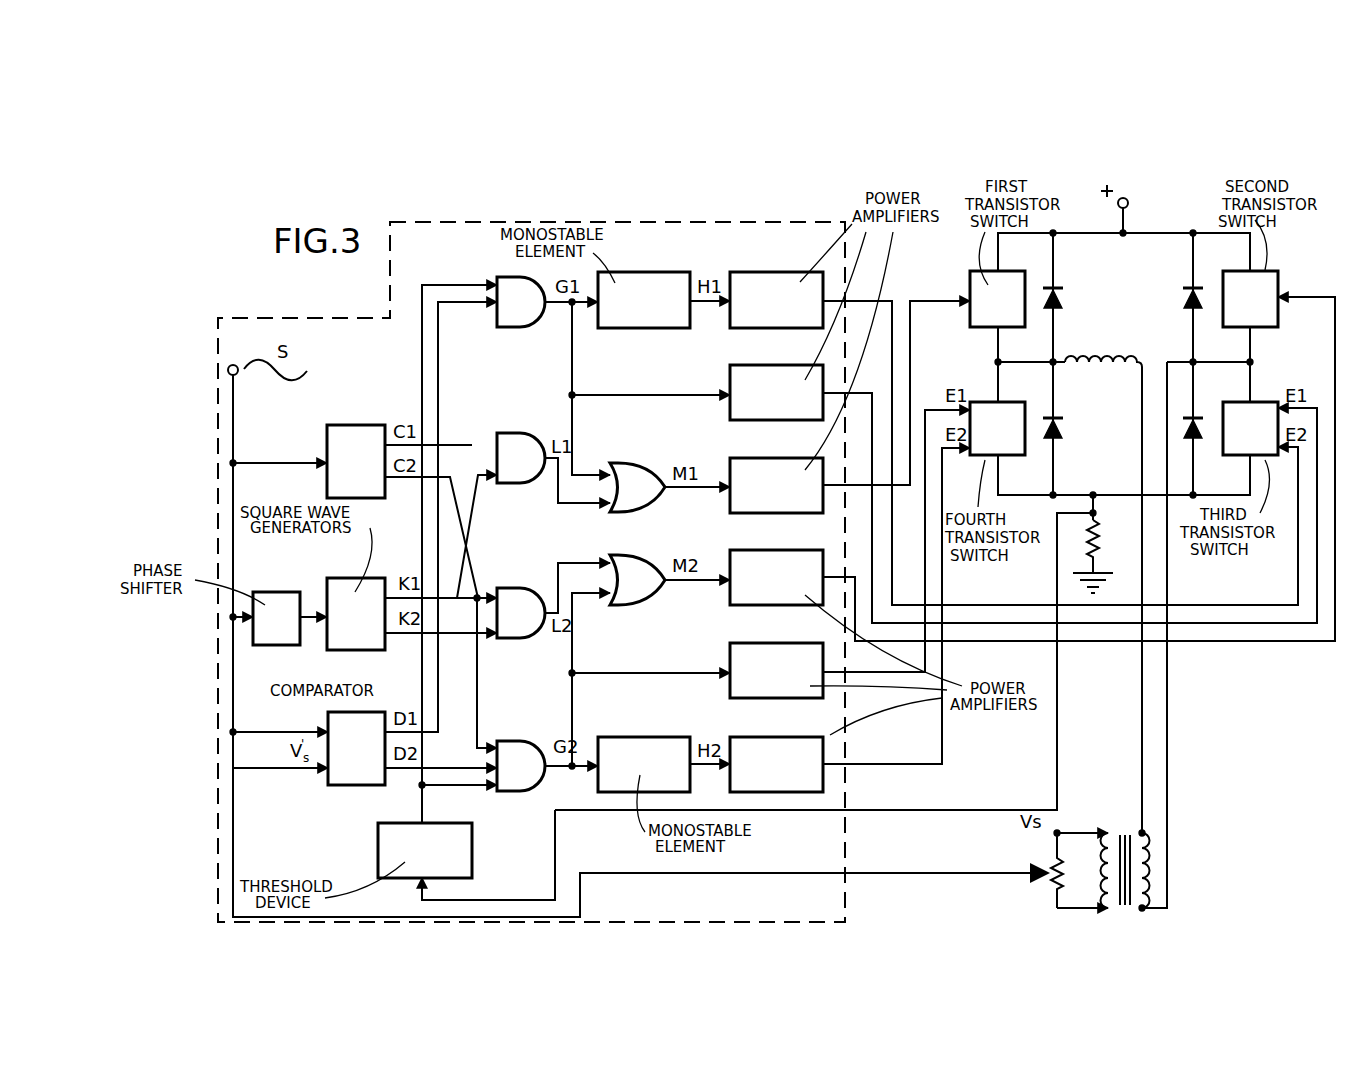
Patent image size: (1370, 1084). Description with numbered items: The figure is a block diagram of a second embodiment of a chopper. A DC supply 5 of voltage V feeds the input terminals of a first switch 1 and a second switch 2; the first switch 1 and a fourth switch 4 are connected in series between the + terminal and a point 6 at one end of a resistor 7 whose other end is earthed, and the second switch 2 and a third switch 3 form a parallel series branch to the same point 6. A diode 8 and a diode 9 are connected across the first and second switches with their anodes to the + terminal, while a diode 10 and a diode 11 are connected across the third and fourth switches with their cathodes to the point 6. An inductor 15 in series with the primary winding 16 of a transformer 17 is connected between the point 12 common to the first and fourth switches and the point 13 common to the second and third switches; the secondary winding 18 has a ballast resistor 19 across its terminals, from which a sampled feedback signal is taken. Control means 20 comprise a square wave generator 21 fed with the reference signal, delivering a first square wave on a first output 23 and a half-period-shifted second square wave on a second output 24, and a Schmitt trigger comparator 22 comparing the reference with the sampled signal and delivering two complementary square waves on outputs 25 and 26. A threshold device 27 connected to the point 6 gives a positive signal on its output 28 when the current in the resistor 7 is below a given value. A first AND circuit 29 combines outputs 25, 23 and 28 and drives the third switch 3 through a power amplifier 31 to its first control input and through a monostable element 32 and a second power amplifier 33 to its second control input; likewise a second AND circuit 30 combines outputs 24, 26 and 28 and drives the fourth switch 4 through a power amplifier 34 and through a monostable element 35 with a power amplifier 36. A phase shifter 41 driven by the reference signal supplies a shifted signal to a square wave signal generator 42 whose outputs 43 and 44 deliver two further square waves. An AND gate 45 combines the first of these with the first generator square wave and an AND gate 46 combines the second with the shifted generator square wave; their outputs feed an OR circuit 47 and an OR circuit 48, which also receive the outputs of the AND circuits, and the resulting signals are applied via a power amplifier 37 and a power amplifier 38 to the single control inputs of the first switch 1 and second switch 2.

The first switch 1 is at (976, 290).
The second switch 2 is at (1262, 285).
The third switch 3 is at (1238, 458).
The fourth switch 4 is at (1017, 458).
The DC supply 5 is at (1120, 210).
The point common to the switch branches 6 is at (1095, 496).
The resistor 7 is at (1100, 550).
The diode 8 is at (1060, 300).
The diode 9 is at (1190, 300).
The diode 10 is at (1200, 425).
The diode 11 is at (1062, 428).
The point common to switches 1 and 4 12 is at (998, 362).
The point common to switches 2 and 3 13 is at (1258, 362).
The inductor 15 is at (1112, 354).
The primary winding 16 is at (1142, 830).
The transformer 17 is at (1122, 830).
The secondary winding 18 is at (1094, 893).
The ballast resistor 19 is at (1055, 862).
The control means 20 is at (300, 325).
The square wave generator 21 is at (348, 430).
The Schmitt trigger connected comparator 22 is at (338, 788).
The first output of the square wave generator 23 is at (413, 445).
The second output of the square wave generator 24 is at (416, 536).
The first output of the comparator 25 is at (426, 522).
The second output of the comparator 26 is at (426, 769).
The threshold device 27 is at (385, 857).
The output of the threshold device 28 is at (425, 823).
The first AND circuit 29 is at (500, 287).
The second AND circuit 30 is at (522, 740).
The power amplifier 31 is at (738, 384).
The monostable element 32 is at (640, 283).
The second power amplifier 33 is at (767, 283).
The power amplifier 34 is at (746, 668).
The monostable element 35 is at (628, 745).
The power amplifier 36 is at (800, 780).
The power amplifier 37 is at (725, 462).
The power amplifier 38 is at (742, 592).
The phase shifter 41 is at (278, 632).
The square wave signal generator 42 is at (345, 593).
The output of the square wave signal generator 43 is at (426, 542).
The output of the square wave signal generator 44 is at (426, 634).
The AND gate 45 is at (520, 438).
The AND gate 46 is at (520, 588).
The OR circuit 47 is at (628, 470).
The OR circuit 48 is at (628, 568).